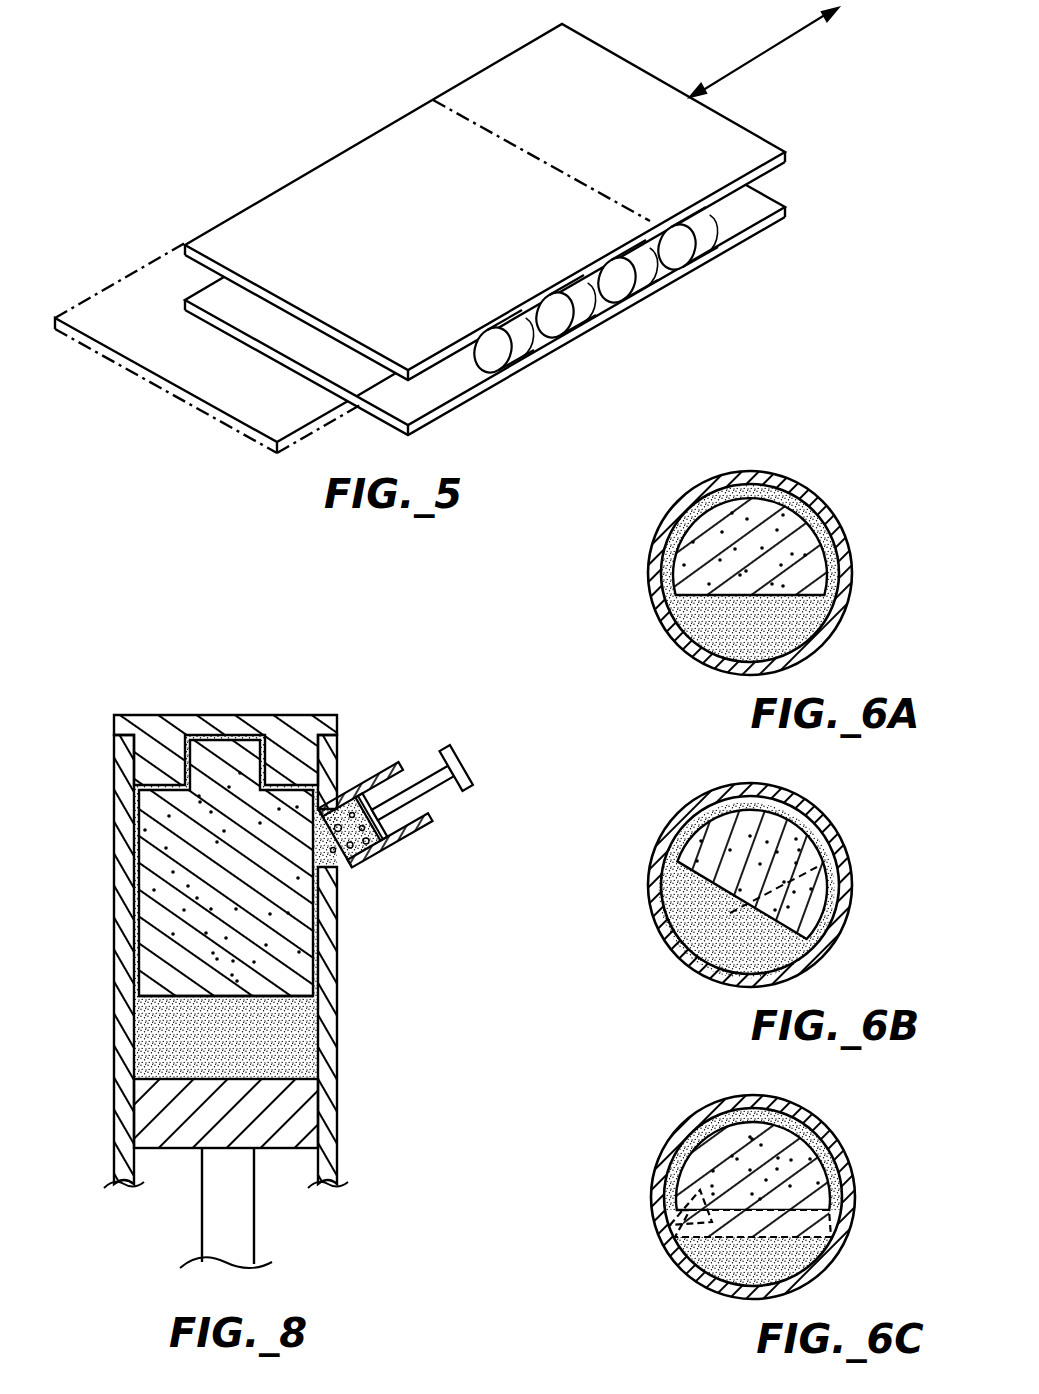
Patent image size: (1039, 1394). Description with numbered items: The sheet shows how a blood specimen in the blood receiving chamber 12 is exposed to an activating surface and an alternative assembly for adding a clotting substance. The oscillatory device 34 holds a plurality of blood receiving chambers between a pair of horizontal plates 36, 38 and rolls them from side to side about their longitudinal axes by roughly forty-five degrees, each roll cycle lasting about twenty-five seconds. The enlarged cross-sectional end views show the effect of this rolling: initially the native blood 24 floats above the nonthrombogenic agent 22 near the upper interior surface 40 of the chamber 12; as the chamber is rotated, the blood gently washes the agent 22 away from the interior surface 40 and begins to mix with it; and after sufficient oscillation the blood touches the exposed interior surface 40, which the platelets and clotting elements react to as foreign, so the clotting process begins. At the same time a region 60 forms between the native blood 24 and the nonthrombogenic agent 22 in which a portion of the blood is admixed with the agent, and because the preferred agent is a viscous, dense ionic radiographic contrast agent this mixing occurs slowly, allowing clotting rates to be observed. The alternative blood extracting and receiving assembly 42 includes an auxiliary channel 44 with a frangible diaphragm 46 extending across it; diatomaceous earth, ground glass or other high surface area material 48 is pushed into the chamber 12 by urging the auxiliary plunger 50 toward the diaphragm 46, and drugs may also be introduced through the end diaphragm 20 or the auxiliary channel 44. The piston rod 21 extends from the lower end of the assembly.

In FIG. 5, the blood receiving chamber 12 is at (557, 336).
In FIG. 6A, the blood receiving chamber 12 is at (708, 667).
In FIG. 6B, the blood receiving chamber 12 is at (708, 975).
In FIG. 6C, the blood receiving chamber 12 is at (711, 1291).
In FIG. 8, the blood receiving chamber 12 is at (284, 966).
In FIG. 8, the end diaphragm 20 is at (290, 720).
In FIG. 8, the piston rod 21 is at (254, 1196).
In FIG. 6A, the nonthrombogenic agent 22 is at (787, 637).
In FIG. 6B, the nonthrombogenic agent 22 is at (787, 945).
In FIG. 6C, the nonthrombogenic agent 22 is at (790, 1261).
In FIG. 8, the nonthrombogenic agent 22 is at (150, 1029).
In FIG. 6A, the native blood 24 is at (793, 547).
In FIG. 6B, the native blood 24 is at (793, 855).
In FIG. 6C, the native blood 24 is at (796, 1171).
In FIG. 8, the native blood 24 is at (146, 907).
In FIG. 5, the oscillatory device 34 is at (414, 76).
In FIG. 5, the horizontal plate 36 is at (740, 122).
In FIG. 5, the horizontal plate 38 is at (787, 208).
In FIG. 6A, the interior surface 40 is at (793, 507).
In FIG. 6B, the interior surface 40 is at (793, 815).
In FIG. 6C, the interior surface 40 is at (798, 1126).
In FIG. 8, the interior surface 40 is at (226, 865).
In FIG. 8, the blood extracting and receiving assembly 42 is at (165, 672).
In FIG. 8, the auxiliary channel 44 is at (370, 773).
In FIG. 8, the frangible diaphragm 46 is at (357, 872).
In FIG. 8, the high surface area material 48 is at (397, 855).
In FIG. 8, the auxiliary plunger 50 is at (448, 747).
In FIG. 6C, the region 60 is at (710, 1208).